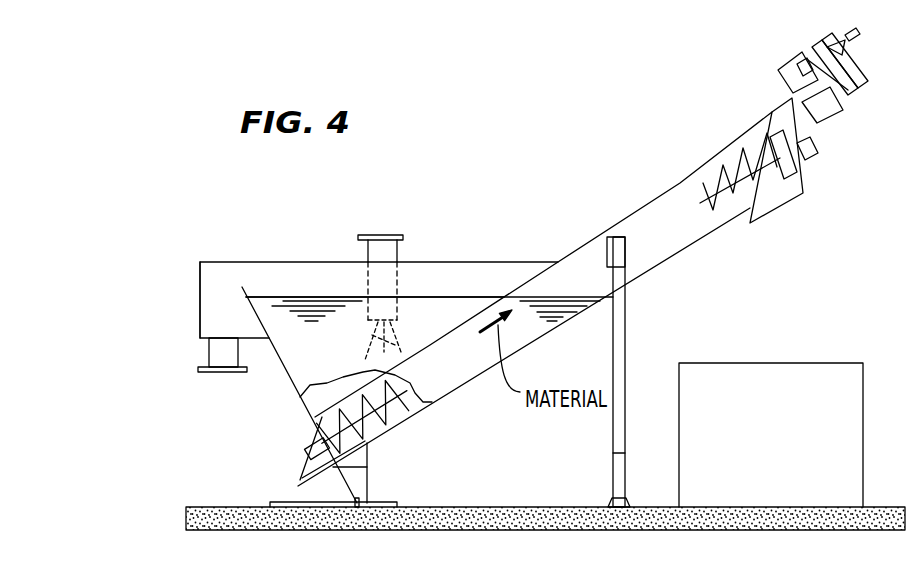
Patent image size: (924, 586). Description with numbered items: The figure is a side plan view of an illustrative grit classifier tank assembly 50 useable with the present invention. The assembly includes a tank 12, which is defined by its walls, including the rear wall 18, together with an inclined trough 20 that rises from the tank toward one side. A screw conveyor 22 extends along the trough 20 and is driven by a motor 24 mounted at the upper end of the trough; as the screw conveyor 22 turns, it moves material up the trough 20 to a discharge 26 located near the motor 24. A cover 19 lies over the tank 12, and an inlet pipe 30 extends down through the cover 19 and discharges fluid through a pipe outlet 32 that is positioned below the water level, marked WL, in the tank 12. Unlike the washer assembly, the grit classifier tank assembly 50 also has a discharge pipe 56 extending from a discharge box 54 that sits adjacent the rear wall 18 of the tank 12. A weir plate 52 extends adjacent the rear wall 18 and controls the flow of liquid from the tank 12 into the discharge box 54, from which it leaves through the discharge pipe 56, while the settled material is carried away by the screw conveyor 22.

The tank 12 is at (522, 250).
The rear wall 18 is at (290, 375).
The cover 19 is at (463, 262).
The trough 20 is at (450, 398).
The screw conveyor 22 is at (396, 425).
The motor 24 is at (830, 108).
The discharge 26 is at (777, 212).
The inlet pipe 30 is at (397, 253).
The pipe outlet 32 is at (368, 322).
The grit classifier tank assembly 50 is at (558, 190).
The weir plate 52 is at (242, 288).
The discharge box 54 is at (226, 270).
The discharge pipe 56 is at (208, 355).
The water level WL is at (332, 297).